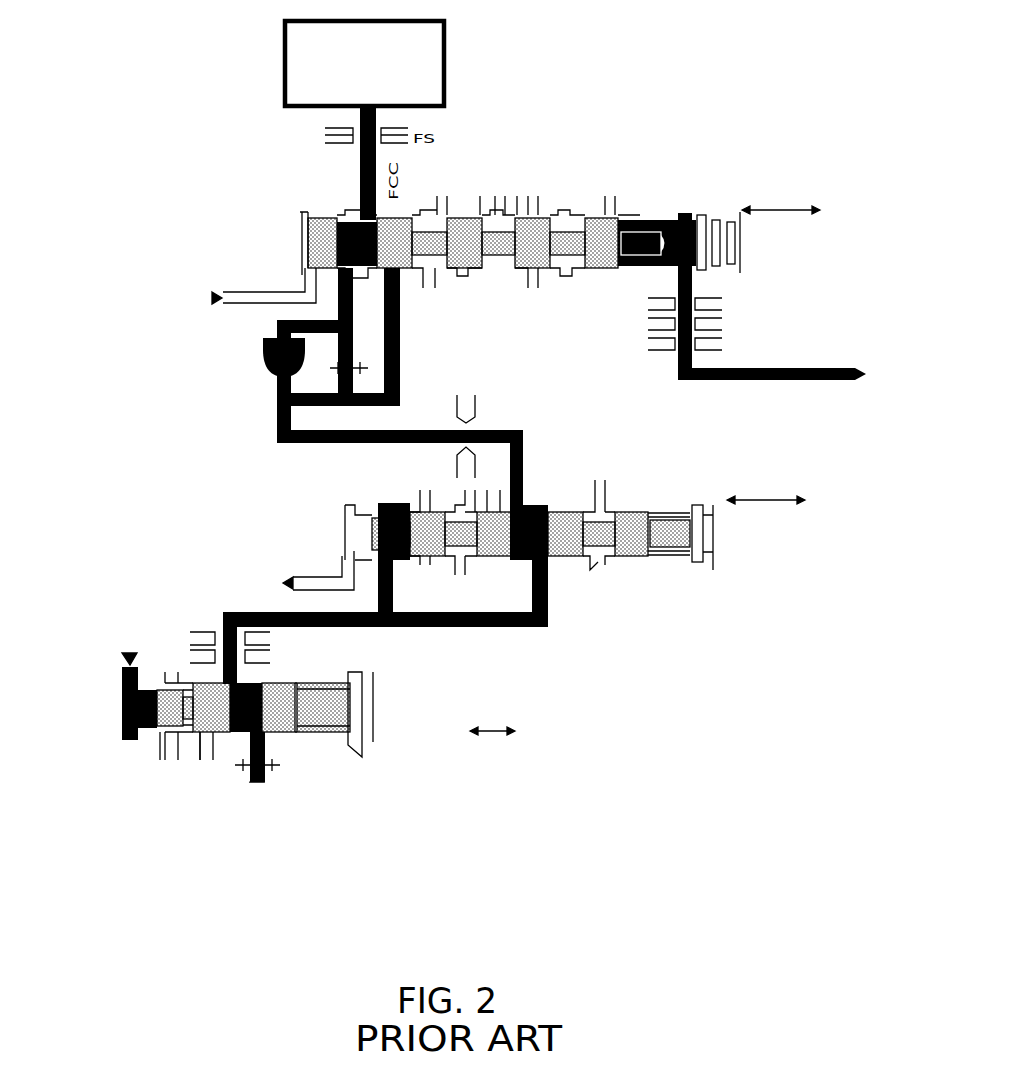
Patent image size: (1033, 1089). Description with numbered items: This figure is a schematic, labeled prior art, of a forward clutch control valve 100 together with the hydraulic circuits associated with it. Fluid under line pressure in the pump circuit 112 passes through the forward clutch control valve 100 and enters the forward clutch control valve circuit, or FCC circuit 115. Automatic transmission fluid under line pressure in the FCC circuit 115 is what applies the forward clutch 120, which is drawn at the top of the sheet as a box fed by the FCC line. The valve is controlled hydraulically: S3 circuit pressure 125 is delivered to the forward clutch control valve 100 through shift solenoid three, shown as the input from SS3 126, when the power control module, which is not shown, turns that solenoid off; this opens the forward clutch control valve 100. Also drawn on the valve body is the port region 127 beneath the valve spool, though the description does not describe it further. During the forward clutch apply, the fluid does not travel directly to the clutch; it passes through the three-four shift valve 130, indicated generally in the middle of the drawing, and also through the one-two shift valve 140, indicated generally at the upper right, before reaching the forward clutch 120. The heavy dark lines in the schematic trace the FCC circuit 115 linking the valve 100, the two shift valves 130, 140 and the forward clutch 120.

The forward clutch control valve 100 is at (330, 756).
The pump circuit 112 is at (255, 780).
The forward clutch control valve circuit 115 is at (277, 436).
The forward clutch 120 is at (446, 63).
The S3 circuit 125 is at (122, 706).
The shift solenoid 3 (SS3) 126 is at (130, 600).
The valve body exhaust port 127 is at (208, 757).
The 3-4 shift valve 130 is at (634, 507).
The 1-2 shift valve 140 is at (610, 196).